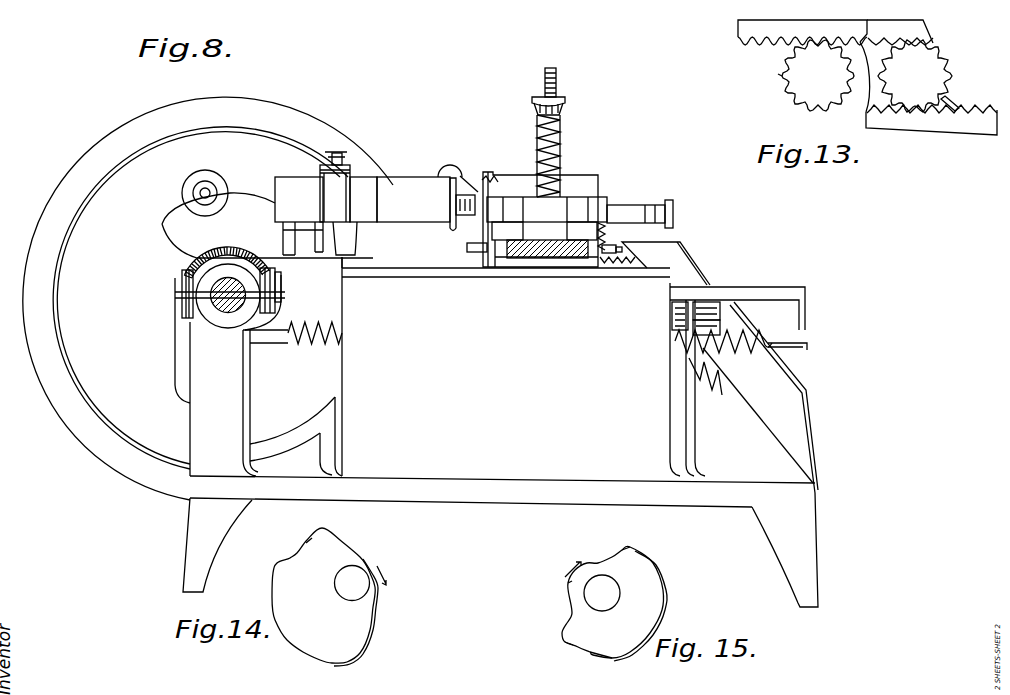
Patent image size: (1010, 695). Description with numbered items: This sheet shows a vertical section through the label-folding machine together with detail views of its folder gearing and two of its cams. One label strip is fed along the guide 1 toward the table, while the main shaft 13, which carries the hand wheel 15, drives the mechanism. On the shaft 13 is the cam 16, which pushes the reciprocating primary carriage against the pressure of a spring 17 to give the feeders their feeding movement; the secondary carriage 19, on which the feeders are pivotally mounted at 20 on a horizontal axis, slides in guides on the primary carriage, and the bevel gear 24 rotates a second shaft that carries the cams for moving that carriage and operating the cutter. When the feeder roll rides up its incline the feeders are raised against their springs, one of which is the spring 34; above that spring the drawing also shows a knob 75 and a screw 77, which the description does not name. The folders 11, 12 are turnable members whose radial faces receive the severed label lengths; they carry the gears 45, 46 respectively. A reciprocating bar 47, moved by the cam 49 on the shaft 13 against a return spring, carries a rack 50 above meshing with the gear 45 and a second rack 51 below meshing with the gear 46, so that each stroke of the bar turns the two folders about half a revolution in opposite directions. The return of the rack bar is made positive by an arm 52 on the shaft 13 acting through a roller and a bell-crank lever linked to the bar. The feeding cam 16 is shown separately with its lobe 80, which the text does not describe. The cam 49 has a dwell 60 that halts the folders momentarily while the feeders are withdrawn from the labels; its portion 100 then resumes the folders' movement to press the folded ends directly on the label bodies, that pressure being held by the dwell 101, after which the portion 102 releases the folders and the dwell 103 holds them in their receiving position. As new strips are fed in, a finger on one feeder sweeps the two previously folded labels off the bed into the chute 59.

In FIG. 8, the guide 1 is at (312, 210).
In FIG. 13, the turnable folder 11 is at (830, 80).
In FIG. 13, the turnable folder 12 is at (930, 82).
In FIG. 8, the shaft 13 is at (227, 318).
In FIG. 14, the shaft 13 is at (352, 580).
In FIG. 15, the shaft 13 is at (590, 585).
In FIG. 8, the hand wheel 15 is at (67, 375).
In FIG. 8, the cam 16 is at (496, 432).
In FIG. 14, the cam 16 is at (318, 604).
In FIG. 8, the spring 17 is at (316, 345).
In FIG. 8, the secondary carriage 19 is at (563, 260).
In FIG. 8, the pivot 20 is at (610, 205).
In FIG. 8, the bevel gear 24 is at (190, 262).
In FIG. 8, the spring 34 is at (562, 150).
In FIG. 13, the gear 45 is at (767, 77).
In FIG. 13, the gear 46 is at (956, 100).
In FIG. 13, the reciprocating bar 47 is at (900, 32).
In FIG. 8, the cam 49 is at (218, 225).
In FIG. 15, the cam 49 is at (613, 602).
In FIG. 8, the rack 50 is at (487, 175).
In FIG. 13, the rack 50 is at (804, 66).
In FIG. 8, the rack 51 is at (630, 268).
In FIG. 13, the rack 51 is at (955, 128).
In FIG. 8, the arm 52 is at (207, 190).
In FIG. 8, the chute 59 is at (751, 415).
In FIG. 15, the dwell 60 is at (573, 645).
In FIG. 8, the knob 75 is at (622, 104).
In FIG. 8, the screw 77 is at (558, 93).
In FIG. 14, the cam lobe 80 is at (307, 543).
In FIG. 15, the cam portion 100 is at (592, 655).
In FIG. 15, the dwell 101 is at (665, 603).
In FIG. 15, the cam portion 102 is at (637, 549).
In FIG. 15, the dwell 103 is at (570, 583).